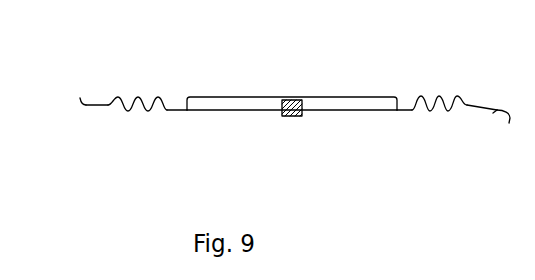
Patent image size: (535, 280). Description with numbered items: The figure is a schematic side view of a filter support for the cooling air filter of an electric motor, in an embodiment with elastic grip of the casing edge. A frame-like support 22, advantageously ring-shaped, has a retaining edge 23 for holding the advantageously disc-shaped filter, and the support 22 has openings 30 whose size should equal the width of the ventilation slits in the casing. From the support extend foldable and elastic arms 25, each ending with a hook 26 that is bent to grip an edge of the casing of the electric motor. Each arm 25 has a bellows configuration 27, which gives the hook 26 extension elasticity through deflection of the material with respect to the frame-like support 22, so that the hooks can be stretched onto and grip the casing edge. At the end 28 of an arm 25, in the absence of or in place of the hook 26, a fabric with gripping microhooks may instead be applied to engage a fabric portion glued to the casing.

The frame-like support 22 is at (372, 97).
The retaining edge 23 is at (382, 111).
The foldable and elastic arm 25 is at (142, 113).
The hook 26 is at (87, 112).
The bellows configuration 27 is at (151, 99).
The end of arm 28 is at (105, 103).
The openings 30 is at (277, 90).